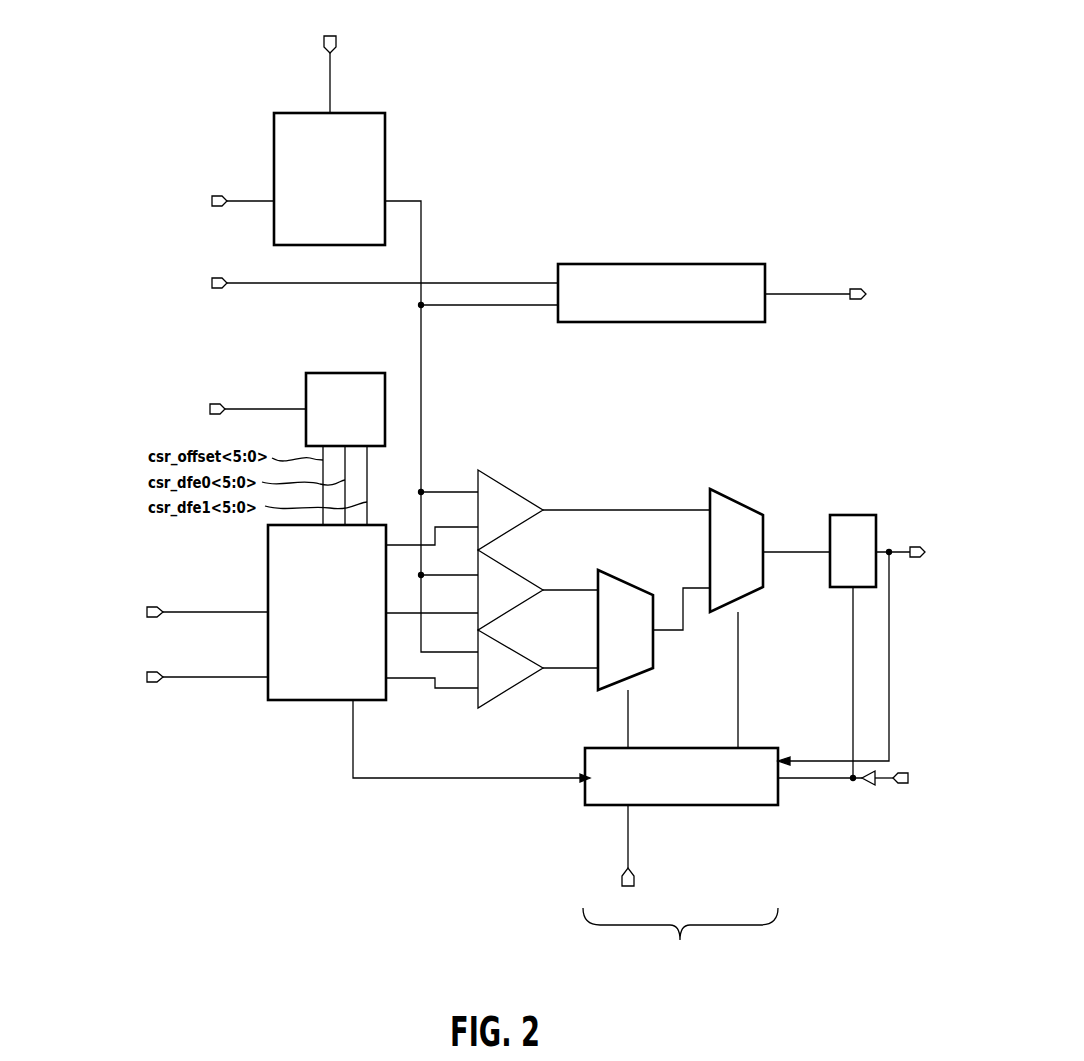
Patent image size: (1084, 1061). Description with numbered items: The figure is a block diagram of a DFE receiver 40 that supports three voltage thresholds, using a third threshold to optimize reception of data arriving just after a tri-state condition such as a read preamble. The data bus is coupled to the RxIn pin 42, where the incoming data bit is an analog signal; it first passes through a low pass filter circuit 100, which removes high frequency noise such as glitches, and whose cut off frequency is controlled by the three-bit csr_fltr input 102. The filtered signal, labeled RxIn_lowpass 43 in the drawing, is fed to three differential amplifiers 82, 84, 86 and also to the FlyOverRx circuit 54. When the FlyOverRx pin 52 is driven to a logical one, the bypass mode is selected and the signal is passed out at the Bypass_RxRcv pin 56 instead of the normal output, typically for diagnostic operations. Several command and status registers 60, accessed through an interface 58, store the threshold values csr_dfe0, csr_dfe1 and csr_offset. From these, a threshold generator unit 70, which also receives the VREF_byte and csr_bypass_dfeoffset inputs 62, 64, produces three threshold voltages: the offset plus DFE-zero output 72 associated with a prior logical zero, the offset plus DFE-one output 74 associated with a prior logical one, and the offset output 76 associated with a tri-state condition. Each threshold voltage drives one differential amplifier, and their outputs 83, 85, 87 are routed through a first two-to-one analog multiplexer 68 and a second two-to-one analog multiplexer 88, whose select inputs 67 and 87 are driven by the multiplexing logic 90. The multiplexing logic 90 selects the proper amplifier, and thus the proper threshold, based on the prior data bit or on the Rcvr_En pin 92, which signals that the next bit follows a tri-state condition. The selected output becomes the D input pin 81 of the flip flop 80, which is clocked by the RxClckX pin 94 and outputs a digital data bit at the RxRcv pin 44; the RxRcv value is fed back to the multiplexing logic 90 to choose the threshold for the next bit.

The DFE receiver 40 is at (666, 98).
The RxIn pin 42 is at (218, 187).
The RxIn_lowpass signal line 43 is at (421, 243).
The RxRcv pin 44 is at (912, 548).
The FlyOverRx pin 52 is at (216, 290).
The FlyOverRx circuit 54 is at (657, 264).
The Bypass_RxRcv pin 56 is at (855, 280).
The interface 58 is at (270, 408).
The command and status registers 60 is at (345, 373).
The VREF_byte input 62 is at (157, 603).
The csr_bypass_dfeoffset input 64 is at (157, 668).
The select input 67 is at (630, 712).
The first 2:1 analog multiplexer 68 is at (655, 648).
The threshold generator unit 70 is at (313, 700).
The offset+DFE0 output 72 is at (450, 612).
The offset+DFE1 output 74 is at (407, 678).
The offset output 76 is at (457, 522).
The flip flop 80 is at (848, 515).
The D input pin 81 is at (797, 550).
The differential amplifier 82 is at (513, 607).
The output of differential amplifier 83 is at (571, 588).
The differential amplifier 84 is at (517, 690).
The output of differential amplifier 85 is at (567, 670).
The differential amplifier 86 is at (512, 525).
The output of differential amplifier 87 is at (625, 508).
The second 2:1 analog multiplexer 88 is at (752, 595).
The multiplexing logic 90 is at (680, 861).
The Rcvr_En pin 92 is at (634, 878).
The RxClckX pin 94 is at (865, 782).
The low pass filter circuit 100 is at (385, 143).
The csr_fltr input 102 is at (330, 82).